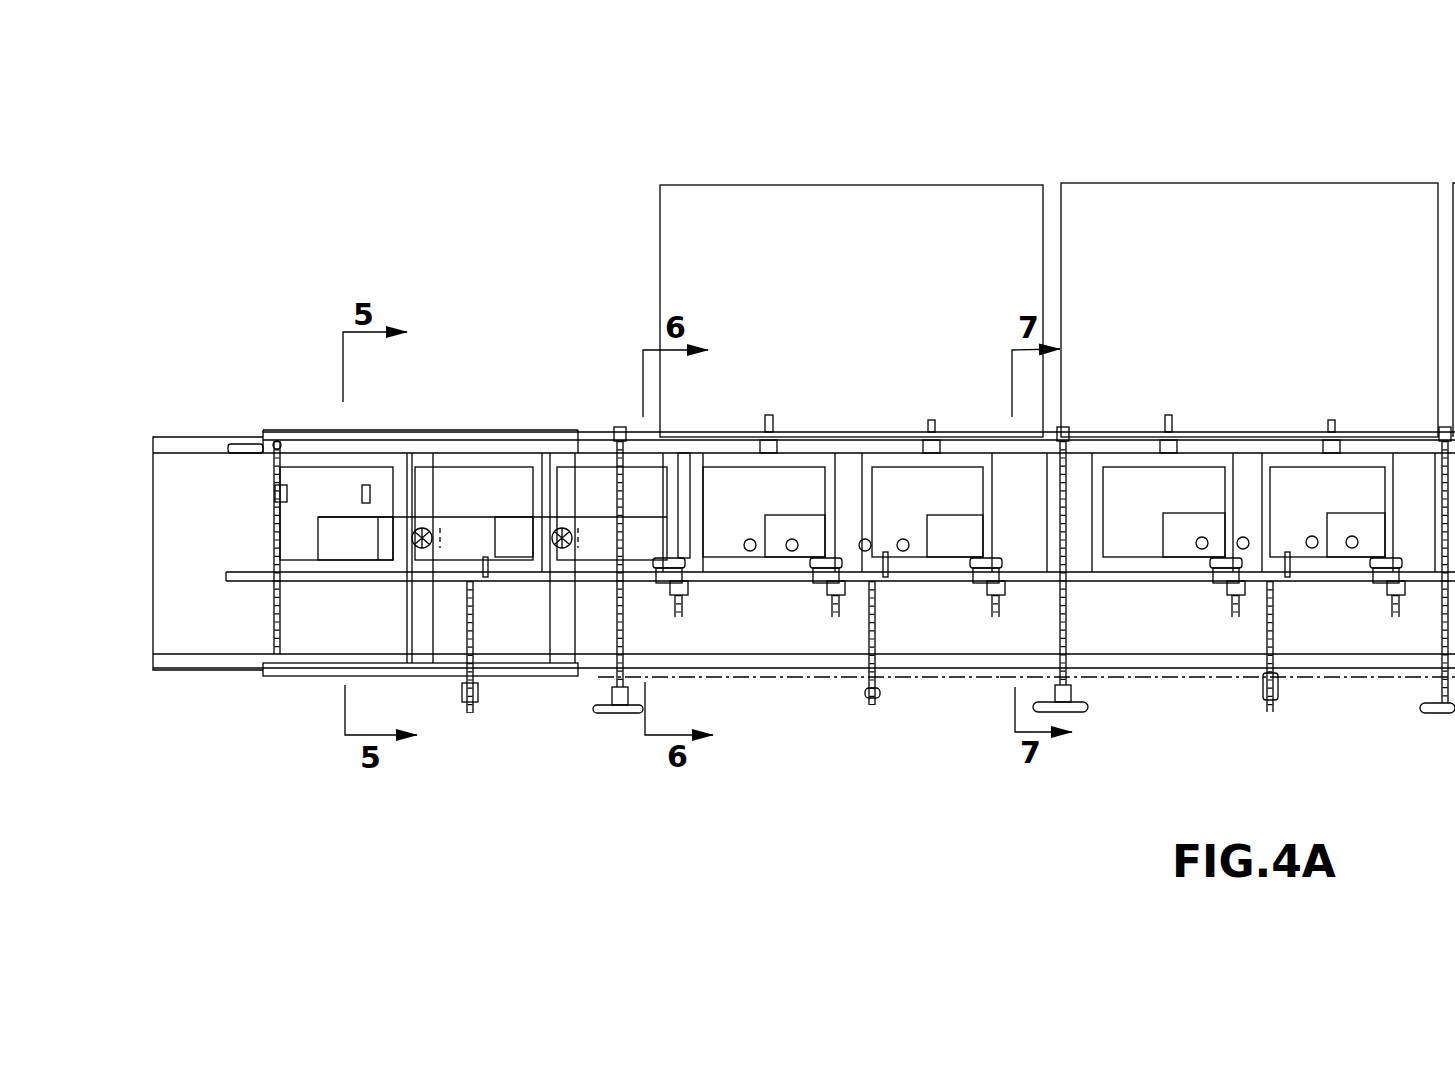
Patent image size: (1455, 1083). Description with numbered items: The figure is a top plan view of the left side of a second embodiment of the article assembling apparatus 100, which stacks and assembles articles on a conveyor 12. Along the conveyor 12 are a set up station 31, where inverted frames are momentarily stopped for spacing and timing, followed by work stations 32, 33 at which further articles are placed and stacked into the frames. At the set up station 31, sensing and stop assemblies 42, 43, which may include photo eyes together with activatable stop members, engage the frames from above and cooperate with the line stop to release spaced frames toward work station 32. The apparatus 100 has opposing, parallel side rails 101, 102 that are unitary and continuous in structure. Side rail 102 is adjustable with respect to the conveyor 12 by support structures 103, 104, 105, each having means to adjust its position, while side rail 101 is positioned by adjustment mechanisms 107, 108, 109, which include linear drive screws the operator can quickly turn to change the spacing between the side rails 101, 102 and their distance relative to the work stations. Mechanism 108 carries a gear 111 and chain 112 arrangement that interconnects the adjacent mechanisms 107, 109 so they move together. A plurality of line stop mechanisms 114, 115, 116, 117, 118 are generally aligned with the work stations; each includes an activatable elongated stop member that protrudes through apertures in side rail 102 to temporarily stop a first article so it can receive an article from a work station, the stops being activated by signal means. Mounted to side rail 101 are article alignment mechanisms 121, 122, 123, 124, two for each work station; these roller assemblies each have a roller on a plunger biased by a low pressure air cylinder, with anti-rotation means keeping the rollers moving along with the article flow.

The conveyor 12 is at (198, 477).
The set up station 31 is at (413, 423).
The work station 32 is at (873, 233).
The work station 33 is at (1253, 235).
The sensing and stop assembly 42 is at (418, 508).
The sensing and stop assembly 43 is at (532, 542).
The assembling apparatus 100 is at (587, 320).
The side rail 101 is at (240, 450).
The side rail 102 is at (243, 581).
The support structure 103 is at (478, 633).
The support structure 104 is at (881, 634).
The support structure 105 is at (1277, 628).
The adjustment mechanism 107 is at (610, 627).
The adjustment mechanism 108 is at (1073, 635).
The adjustment mechanism 109 is at (1438, 618).
The gear 111 is at (717, 682).
The chain 112 is at (1242, 677).
The line stop mechanism 114 is at (692, 586).
The line stop mechanism 115 is at (812, 586).
The line stop mechanism 116 is at (980, 588).
The line stop mechanism 117 is at (1218, 588).
The line stop mechanism 118 is at (1380, 586).
The article alignment mechanism 121 is at (778, 425).
The article alignment mechanism 122 is at (938, 427).
The article alignment mechanism 123 is at (1178, 422).
The article alignment mechanism 124 is at (1338, 423).